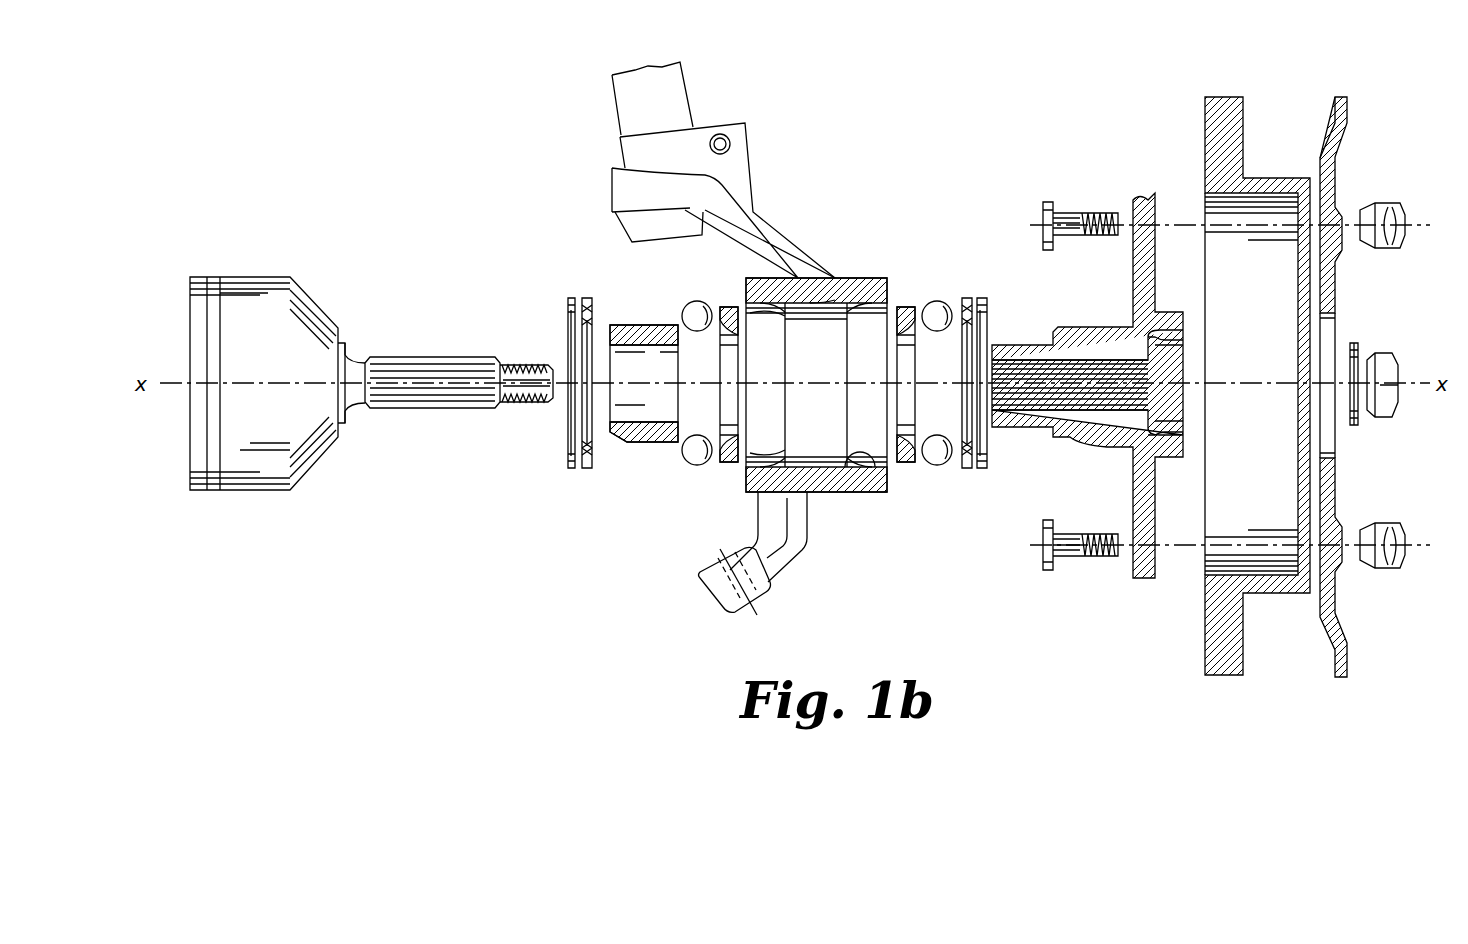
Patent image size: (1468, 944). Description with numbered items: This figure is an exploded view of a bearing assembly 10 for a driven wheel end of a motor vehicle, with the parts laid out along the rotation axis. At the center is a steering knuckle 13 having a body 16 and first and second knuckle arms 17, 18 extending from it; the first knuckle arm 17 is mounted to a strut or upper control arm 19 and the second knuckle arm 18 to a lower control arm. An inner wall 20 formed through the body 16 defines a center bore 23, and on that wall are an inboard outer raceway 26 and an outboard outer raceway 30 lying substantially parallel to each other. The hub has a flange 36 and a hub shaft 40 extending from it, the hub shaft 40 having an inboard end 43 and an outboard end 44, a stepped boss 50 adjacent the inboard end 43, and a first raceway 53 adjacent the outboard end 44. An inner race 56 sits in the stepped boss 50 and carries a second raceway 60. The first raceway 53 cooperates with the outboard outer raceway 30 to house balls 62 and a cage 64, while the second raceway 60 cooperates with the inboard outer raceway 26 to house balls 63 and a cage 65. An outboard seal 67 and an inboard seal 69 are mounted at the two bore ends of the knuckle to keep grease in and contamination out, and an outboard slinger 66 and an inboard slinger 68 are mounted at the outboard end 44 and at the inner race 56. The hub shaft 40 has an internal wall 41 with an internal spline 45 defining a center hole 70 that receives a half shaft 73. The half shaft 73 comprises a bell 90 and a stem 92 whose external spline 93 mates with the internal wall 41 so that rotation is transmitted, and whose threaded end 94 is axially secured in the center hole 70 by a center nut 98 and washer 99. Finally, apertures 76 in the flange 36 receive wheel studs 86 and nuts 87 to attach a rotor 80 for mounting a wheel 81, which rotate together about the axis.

The bearing assembly 10 is at (483, 118).
The steering knuckle 13 is at (742, 484).
The body 16 is at (836, 283).
The first knuckle arm 17 is at (755, 220).
The second knuckle arm 18 is at (798, 547).
The upper control arm 19 is at (657, 152).
The inner wall 20 is at (862, 475).
The center bore 23 is at (821, 371).
The inboard outer raceway 26 is at (800, 300).
The outboard outer raceway 30 is at (887, 290).
The flange 36 is at (1133, 270).
The hub shaft 40 is at (1062, 327).
The internal wall 41 is at (1052, 397).
The inboard end 43 is at (1010, 427).
The outboard end 44 is at (1130, 450).
The internal spline 45 is at (1137, 393).
The stepped boss 50 is at (1015, 345).
The first raceway 53 is at (1093, 327).
The inner race 56 is at (644, 383).
The second raceway 60 is at (640, 335).
The balls 62 is at (940, 302).
The balls 63 is at (683, 322).
The cage 64 is at (910, 300).
The cage 65 is at (745, 298).
The outboard slinger 66 is at (982, 470).
The outboard seal 67 is at (965, 470).
The inboard slinger 68 is at (572, 470).
The inboard seal 69 is at (587, 470).
The center hole 70 is at (1020, 390).
The half shaft 73 is at (258, 272).
The apertures 76 is at (1150, 205).
The rotor 80 is at (1243, 118).
The wheel 81 is at (1345, 135).
The wheel studs 86 is at (1070, 212).
The nuts 87 is at (1393, 205).
The bell 90 is at (258, 492).
The stem 92 is at (418, 412).
The external spline 93 is at (440, 355).
The threaded end 94 is at (520, 355).
The center nut 98 is at (1378, 350).
The washer 99 is at (1356, 425).